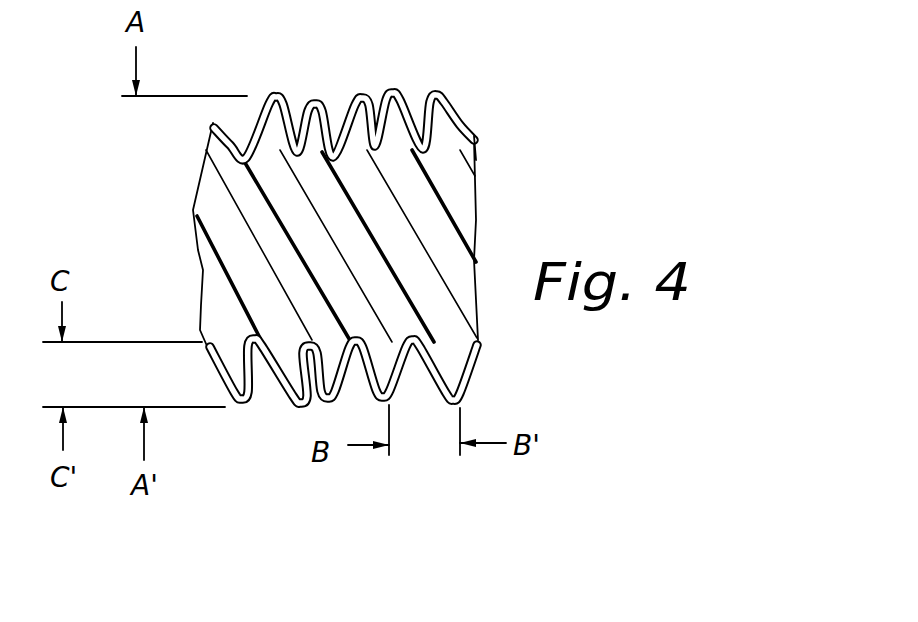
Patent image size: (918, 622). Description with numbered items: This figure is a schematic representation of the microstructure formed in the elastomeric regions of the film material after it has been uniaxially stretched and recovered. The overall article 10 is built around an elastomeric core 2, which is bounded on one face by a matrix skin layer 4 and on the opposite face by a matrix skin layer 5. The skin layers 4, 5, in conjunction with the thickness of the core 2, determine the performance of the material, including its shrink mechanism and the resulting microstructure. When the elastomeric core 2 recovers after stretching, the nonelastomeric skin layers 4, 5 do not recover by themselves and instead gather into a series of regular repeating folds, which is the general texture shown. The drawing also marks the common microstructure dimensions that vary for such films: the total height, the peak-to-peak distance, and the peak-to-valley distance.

The stitched composite strip 10 is at (548, 101).
The elastomeric core 2 is at (468, 195).
The matrix skin layer 4 is at (357, 97).
The matrix skin layer 5 is at (245, 396).